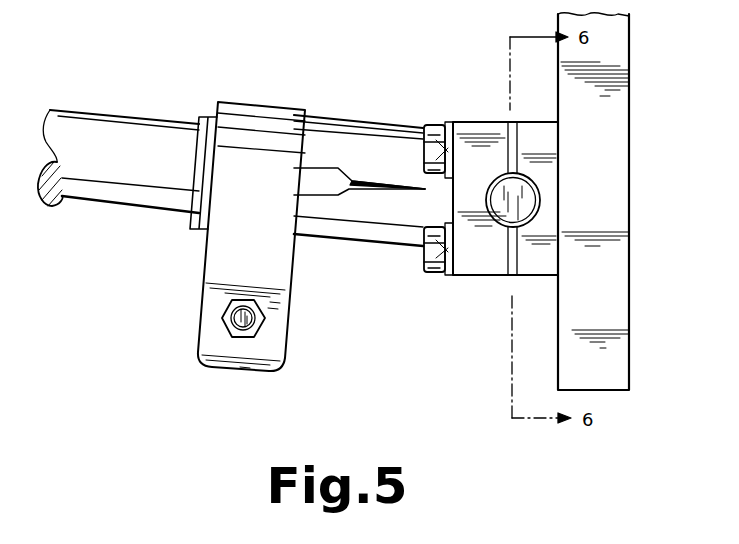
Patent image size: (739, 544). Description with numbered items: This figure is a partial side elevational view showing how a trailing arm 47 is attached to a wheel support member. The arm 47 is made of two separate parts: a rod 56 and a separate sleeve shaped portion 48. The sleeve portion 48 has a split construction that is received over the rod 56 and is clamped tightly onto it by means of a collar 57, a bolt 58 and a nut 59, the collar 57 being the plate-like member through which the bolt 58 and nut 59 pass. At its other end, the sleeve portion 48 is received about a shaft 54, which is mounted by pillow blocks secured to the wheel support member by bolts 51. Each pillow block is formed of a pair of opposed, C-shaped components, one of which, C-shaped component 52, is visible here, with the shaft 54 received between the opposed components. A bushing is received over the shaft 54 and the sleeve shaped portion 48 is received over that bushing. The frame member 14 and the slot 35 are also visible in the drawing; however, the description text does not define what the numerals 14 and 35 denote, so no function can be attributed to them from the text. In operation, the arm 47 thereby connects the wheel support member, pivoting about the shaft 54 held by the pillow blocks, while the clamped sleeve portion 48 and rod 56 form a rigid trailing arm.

The support bar 14 is at (612, 322).
The slot 35 is at (543, 276).
The arm 47 is at (210, 269).
The sleeve portion 48 is at (362, 137).
The bolts 51 is at (430, 250).
The C-shaped component 52 is at (487, 258).
The shaft 54 is at (521, 186).
The rod 56 is at (138, 135).
The collar 57 is at (212, 348).
The bolt 58 is at (243, 331).
The nut 59 is at (259, 333).